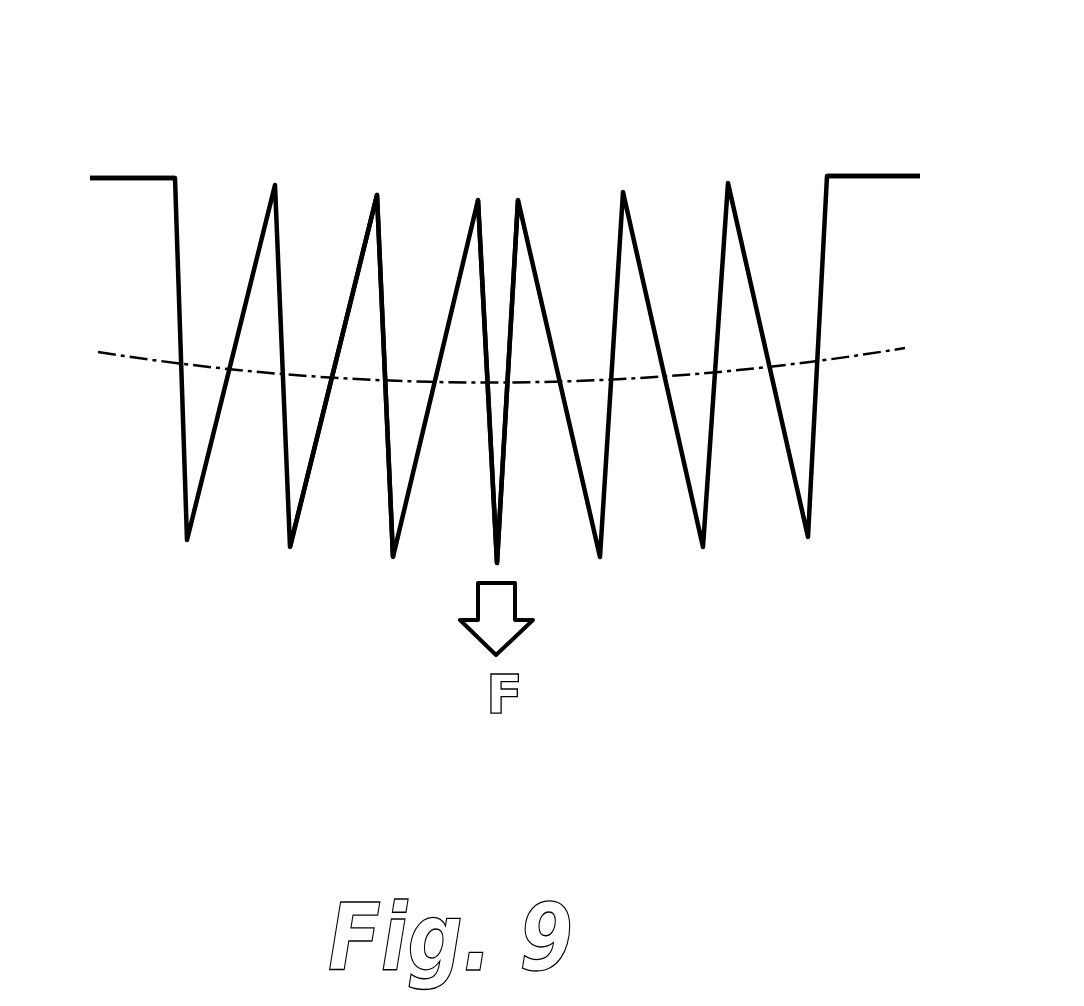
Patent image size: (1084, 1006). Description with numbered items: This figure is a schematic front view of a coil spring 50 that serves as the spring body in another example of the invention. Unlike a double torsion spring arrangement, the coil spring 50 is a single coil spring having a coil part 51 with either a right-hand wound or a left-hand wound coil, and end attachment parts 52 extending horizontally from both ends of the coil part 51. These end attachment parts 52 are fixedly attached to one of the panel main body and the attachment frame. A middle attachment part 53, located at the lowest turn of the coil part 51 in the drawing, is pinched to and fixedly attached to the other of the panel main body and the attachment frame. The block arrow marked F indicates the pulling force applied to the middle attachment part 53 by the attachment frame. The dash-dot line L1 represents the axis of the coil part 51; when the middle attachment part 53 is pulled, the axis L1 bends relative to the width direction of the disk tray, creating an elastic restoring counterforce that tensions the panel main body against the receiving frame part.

The coil spring 50 is at (166, 556).
The coil part 51 is at (380, 218).
The end attachment parts 52 is at (125, 177).
The middle attachment part 53 is at (500, 556).
The axis of the coil part L1 is at (143, 360).